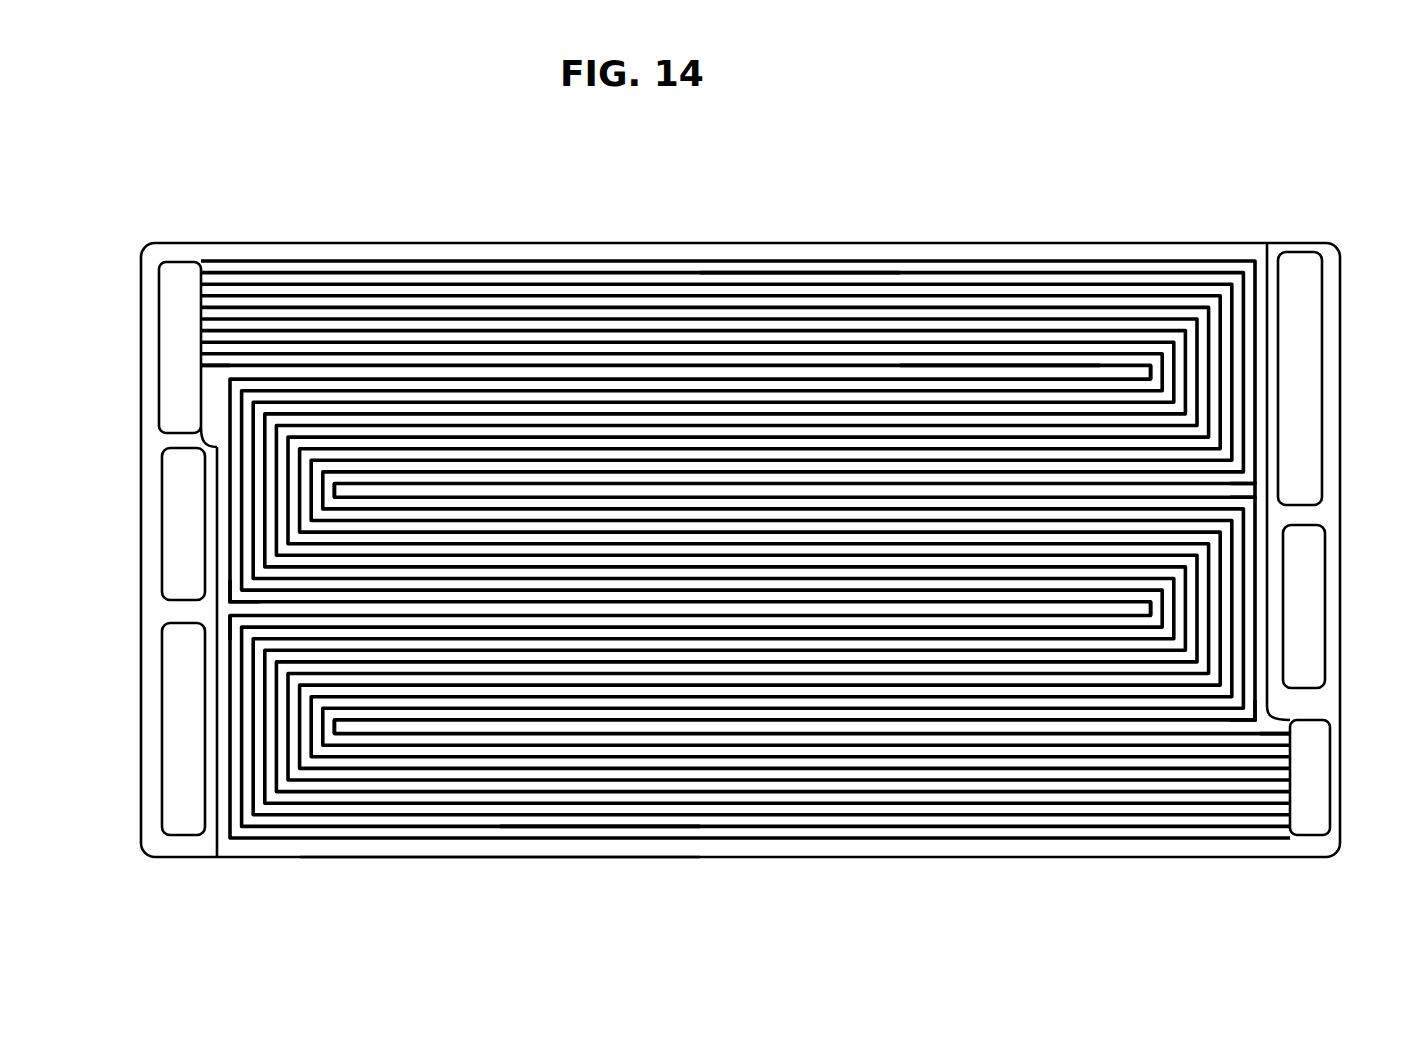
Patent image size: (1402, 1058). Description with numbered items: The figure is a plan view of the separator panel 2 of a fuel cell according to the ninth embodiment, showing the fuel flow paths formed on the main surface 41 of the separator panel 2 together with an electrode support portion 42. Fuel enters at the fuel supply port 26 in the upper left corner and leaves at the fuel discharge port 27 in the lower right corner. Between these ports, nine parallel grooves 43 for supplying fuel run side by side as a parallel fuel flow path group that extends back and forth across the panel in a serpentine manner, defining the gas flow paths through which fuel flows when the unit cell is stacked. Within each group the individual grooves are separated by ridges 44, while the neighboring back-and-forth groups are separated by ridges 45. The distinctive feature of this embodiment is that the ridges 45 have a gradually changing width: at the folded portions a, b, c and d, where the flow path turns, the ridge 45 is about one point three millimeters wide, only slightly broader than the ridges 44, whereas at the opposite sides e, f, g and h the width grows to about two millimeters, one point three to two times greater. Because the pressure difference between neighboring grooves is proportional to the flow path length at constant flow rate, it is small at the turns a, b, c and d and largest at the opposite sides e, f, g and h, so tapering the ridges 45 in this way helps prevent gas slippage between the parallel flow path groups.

The separator panel 2 is at (362, 860).
The fuel supply port 26 is at (188, 354).
The fuel discharge port 27 is at (1310, 777).
The main surface of the separator panel 41 is at (472, 846).
The electrode support portion 42 is at (583, 822).
The parallel grooves for supplying fuel 43 is at (745, 489).
The ridges between the grooves inside the parallel flow path group 44 is at (789, 275).
The ridges between the parallel flow path groups 45 is at (990, 372).
The folded portion a is at (1152, 368).
The folded portion b is at (330, 490).
The folded portion c is at (1162, 603).
The folded portion d is at (332, 722).
The opposite side e is at (212, 378).
The opposite side f is at (1257, 486).
The opposite side g is at (237, 608).
The opposite side h is at (1260, 716).